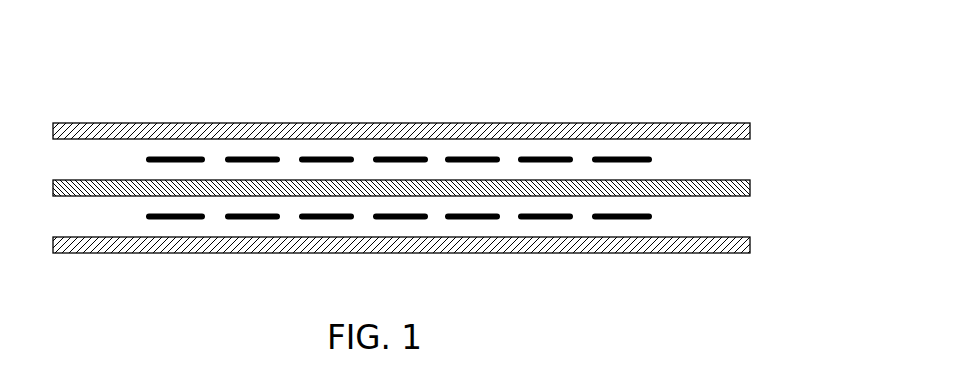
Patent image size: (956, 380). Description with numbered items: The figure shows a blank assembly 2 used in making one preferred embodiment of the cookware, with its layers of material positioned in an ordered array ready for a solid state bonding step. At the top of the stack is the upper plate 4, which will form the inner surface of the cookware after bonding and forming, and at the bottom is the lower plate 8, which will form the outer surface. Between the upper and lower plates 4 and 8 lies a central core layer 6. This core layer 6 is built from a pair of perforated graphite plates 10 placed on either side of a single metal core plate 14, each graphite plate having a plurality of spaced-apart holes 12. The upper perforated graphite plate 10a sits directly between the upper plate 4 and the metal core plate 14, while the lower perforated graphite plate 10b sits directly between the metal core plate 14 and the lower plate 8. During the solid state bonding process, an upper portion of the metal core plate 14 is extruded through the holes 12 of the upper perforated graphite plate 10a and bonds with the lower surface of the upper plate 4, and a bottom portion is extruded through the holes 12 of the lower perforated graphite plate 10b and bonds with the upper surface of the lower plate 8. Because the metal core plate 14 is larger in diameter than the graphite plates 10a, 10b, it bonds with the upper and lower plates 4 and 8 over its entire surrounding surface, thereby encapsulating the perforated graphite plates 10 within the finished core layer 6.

The blank assembly 2 is at (756, 40).
The upper plate 4 is at (736, 130).
The central core layer 6 is at (435, 171).
The lower plate 8 is at (720, 248).
The perforated graphite plate 10 is at (370, 183).
The upper perforated graphite plate 10a is at (634, 157).
The lower perforated graphite plate 10b is at (634, 219).
The holes 12 is at (583, 163).
The metal core plate 14 is at (417, 155).